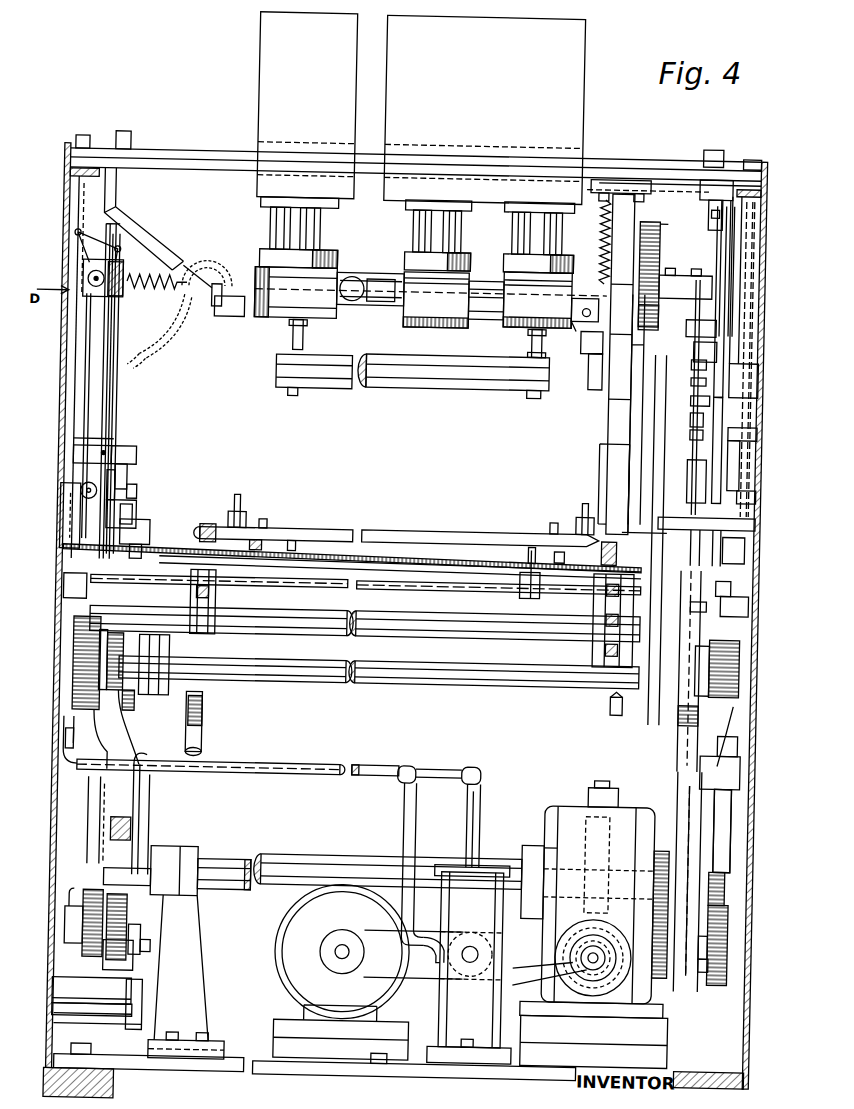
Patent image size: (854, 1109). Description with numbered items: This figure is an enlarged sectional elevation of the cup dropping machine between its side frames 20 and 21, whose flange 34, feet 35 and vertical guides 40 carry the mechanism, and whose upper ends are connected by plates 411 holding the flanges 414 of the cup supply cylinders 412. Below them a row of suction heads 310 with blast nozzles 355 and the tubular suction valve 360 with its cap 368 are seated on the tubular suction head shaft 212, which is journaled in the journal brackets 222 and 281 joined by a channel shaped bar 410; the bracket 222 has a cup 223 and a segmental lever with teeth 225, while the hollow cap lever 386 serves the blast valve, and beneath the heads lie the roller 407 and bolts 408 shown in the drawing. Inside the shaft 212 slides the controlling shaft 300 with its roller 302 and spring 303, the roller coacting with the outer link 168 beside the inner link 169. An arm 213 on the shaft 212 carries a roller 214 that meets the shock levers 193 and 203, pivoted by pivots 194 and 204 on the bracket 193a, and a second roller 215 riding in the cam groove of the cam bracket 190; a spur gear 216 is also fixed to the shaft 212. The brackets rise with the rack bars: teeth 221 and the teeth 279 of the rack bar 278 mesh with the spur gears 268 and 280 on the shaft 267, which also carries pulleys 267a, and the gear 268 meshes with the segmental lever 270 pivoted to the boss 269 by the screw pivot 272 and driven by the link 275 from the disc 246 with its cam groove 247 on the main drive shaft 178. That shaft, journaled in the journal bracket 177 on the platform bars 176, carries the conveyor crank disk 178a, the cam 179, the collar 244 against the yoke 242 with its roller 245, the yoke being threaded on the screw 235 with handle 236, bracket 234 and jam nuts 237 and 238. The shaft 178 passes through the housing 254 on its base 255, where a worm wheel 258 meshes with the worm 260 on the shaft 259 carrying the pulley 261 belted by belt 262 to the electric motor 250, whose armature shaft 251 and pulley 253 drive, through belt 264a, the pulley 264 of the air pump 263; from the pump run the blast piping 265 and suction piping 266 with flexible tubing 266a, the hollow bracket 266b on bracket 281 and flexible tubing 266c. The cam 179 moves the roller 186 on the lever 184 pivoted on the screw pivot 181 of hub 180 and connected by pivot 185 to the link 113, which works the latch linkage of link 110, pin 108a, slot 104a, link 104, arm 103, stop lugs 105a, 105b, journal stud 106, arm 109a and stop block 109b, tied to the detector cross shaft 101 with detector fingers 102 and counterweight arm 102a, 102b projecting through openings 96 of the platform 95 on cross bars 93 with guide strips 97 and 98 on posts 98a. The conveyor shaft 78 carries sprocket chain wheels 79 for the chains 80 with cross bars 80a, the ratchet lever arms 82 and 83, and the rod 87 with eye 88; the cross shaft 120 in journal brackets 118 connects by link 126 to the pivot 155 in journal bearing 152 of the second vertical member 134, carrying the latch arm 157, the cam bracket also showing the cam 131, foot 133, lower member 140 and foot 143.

The side frame 20 is at (55, 221).
The side frame 21 is at (758, 331).
The flange 34 is at (58, 552).
The feet 35 is at (753, 1073).
The vertical guides 40 is at (102, 396).
The shaft 78 is at (508, 638).
The sprocket chain wheels 79 is at (215, 612).
The sprocket chains 80 is at (198, 532).
The conveyor cross bars 80a is at (405, 531).
The arm 82 is at (136, 702).
The arm 83 is at (140, 555).
The rod 87 is at (135, 830).
The eye 88 is at (71, 920).
The cross bars 93 is at (398, 568).
The platform 95 is at (430, 560).
The openings 96 is at (262, 543).
The longitudinal guide strips 97 is at (260, 522).
The longitudinal guide strips 98 is at (576, 514).
The posts 98a is at (584, 512).
The cross shaft 101 is at (450, 578).
The detector fingers 102 is at (294, 548).
The arm 102a is at (170, 672).
The counter weight 102b is at (204, 727).
The arm 103 is at (148, 535).
The link 104 is at (130, 520).
The slot 104a is at (134, 496).
The stop lug 105a is at (78, 498).
The stop lug 105b is at (100, 445).
The journal stud 106 is at (124, 478).
The pin 108a is at (134, 512).
The arm 109a is at (133, 460).
The stop block 109b is at (105, 456).
The link 110 is at (112, 492).
The link 113 is at (153, 795).
The journal brackets 118 is at (63, 600).
The cross shaft 120 is at (455, 625).
The link 126 is at (645, 425).
The cam 131 is at (598, 452).
The foot 133 is at (642, 186).
The second vertical member 134 is at (597, 242).
The lower member 140 is at (680, 524).
The foot 143 is at (743, 540).
The journal bearing 152 is at (632, 362).
The pivot 155 is at (645, 344).
The latch arm 157 is at (590, 370).
The outer link 168 is at (70, 391).
The inner link 169 is at (108, 420).
The bars 176 is at (436, 1077).
The journal bracket 177 is at (208, 985).
The main drive shaft 178 is at (306, 857).
The conveyor crank disk 178a is at (92, 800).
The cam 179 is at (110, 830).
The hub 180 is at (92, 991).
The screw pivot 181 is at (142, 1020).
The lever 184 is at (132, 1010).
The pivot 185 is at (147, 950).
The roller 186 is at (110, 960).
The cam bracket 190 is at (752, 262).
The shock lever 193 is at (724, 345).
The bracket 193a is at (740, 406).
The pivot 194 is at (689, 377).
The second shock lever 203 is at (740, 458).
The pivot 204 is at (689, 402).
The tubular suction head shaft 212 is at (345, 278).
The arm 213 is at (745, 252).
The roller 214 is at (713, 232).
The second roller 215 is at (745, 216).
The spur gear 216 is at (652, 315).
The rack teeth 221 is at (680, 712).
The journal bracket 222 is at (684, 325).
The cup 223 is at (672, 275).
The teeth 225 is at (641, 226).
The bracket 234 is at (689, 391).
The screw 235 is at (686, 434).
The adjusting handle 236 is at (684, 476).
The jam nut 237 is at (686, 418).
The jam nut 238 is at (690, 600).
The yoke 242 is at (680, 734).
The collar 244 is at (681, 845).
The roller 245 is at (710, 966).
The disc 246 is at (714, 950).
The cam groove 247 is at (734, 930).
The electric motor 250 is at (342, 971).
The armature shaft 251 is at (342, 956).
The pulley 253 is at (372, 942).
The housing 254 is at (570, 810).
The base 255 is at (593, 1034).
The worm wheel 258 is at (552, 842).
The shaft 259 is at (620, 968).
The worm 260 is at (542, 969).
The pulley 261 is at (556, 982).
The belt 262 is at (490, 930).
The air pump 263 is at (471, 967).
The pulley 264 is at (470, 946).
The belt 264a is at (440, 980).
The blast piping 265 is at (66, 730).
The suction piping 266 is at (68, 752).
The flexible tubing 266a is at (150, 360).
The hollow bracket 266b is at (160, 322).
The flexible tubing 266c is at (203, 265).
The shaft 267 is at (432, 686).
The pulleys 267a is at (160, 720).
The spur gear 268 is at (740, 650).
The boss 269 is at (745, 770).
The segmental lever 270 is at (745, 720).
The screw pivot 272 is at (703, 765).
The link 275 is at (730, 870).
The rack bar 278 is at (74, 199).
The teeth 279 is at (100, 728).
The spur gear 280 is at (74, 641).
The journal bracket 281 is at (130, 243).
The controlling shaft 300 is at (366, 302).
The roller 302 is at (80, 300).
The spring 303 is at (140, 278).
The suction heads 310 is at (340, 262).
The blast nozzles 355 is at (252, 222).
The tubular suction valve 360 is at (371, 355).
The cap 368 is at (575, 337).
The hollow cap lever 386 is at (222, 322).
The roller shaft 407 is at (401, 382).
The bolt 408 is at (297, 337).
The channel shaped bar 410 is at (160, 155).
The plates 411 is at (84, 155).
The cup supply cylinders 412 is at (573, 52).
The flanges 414 is at (598, 160).